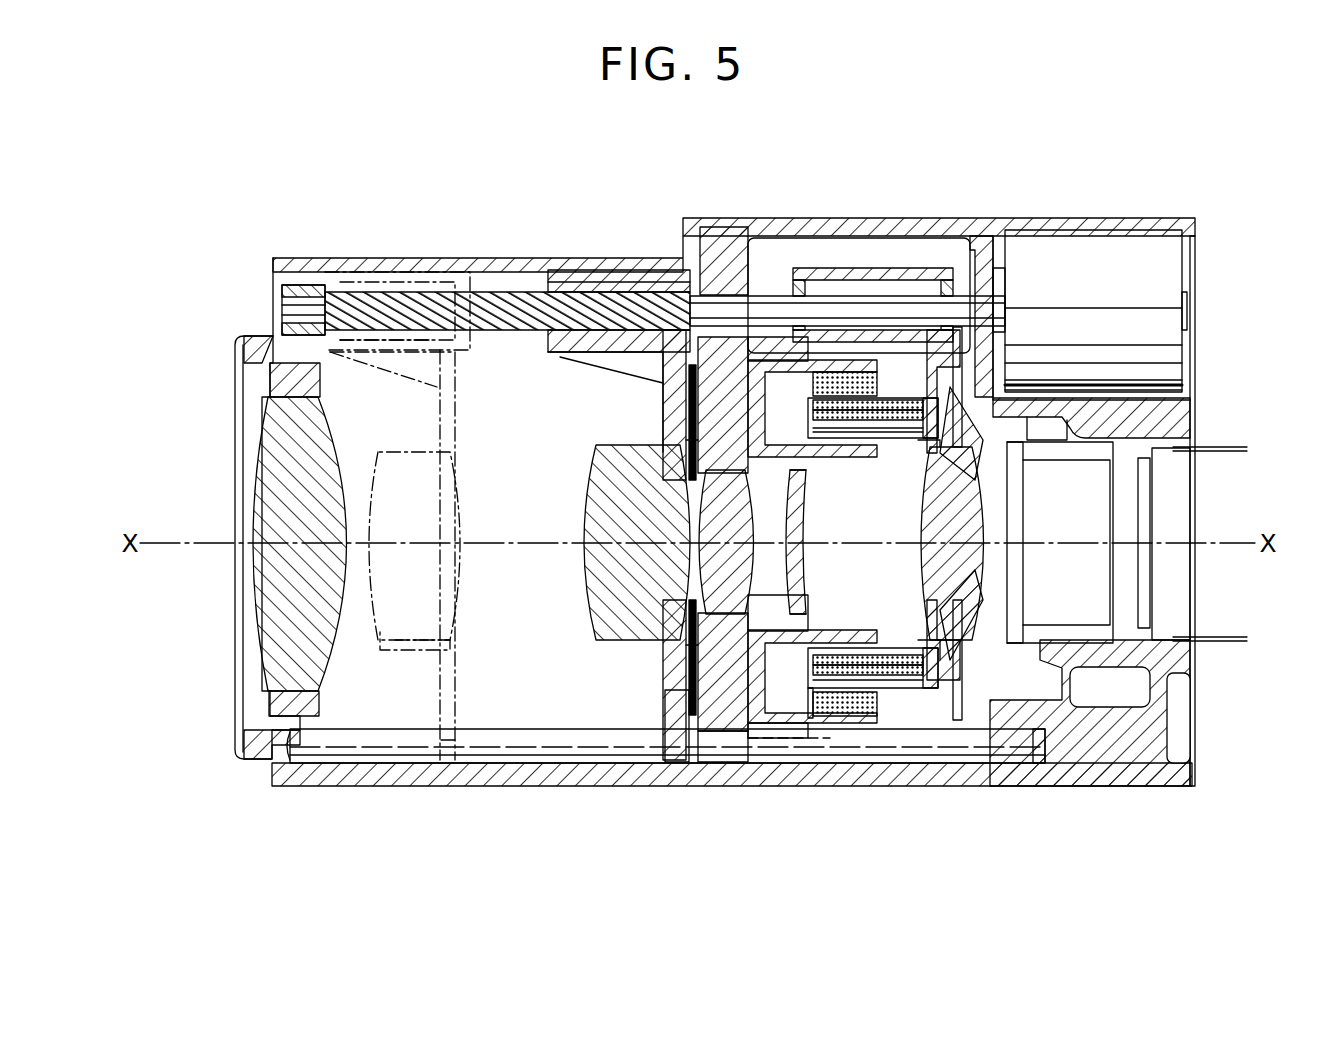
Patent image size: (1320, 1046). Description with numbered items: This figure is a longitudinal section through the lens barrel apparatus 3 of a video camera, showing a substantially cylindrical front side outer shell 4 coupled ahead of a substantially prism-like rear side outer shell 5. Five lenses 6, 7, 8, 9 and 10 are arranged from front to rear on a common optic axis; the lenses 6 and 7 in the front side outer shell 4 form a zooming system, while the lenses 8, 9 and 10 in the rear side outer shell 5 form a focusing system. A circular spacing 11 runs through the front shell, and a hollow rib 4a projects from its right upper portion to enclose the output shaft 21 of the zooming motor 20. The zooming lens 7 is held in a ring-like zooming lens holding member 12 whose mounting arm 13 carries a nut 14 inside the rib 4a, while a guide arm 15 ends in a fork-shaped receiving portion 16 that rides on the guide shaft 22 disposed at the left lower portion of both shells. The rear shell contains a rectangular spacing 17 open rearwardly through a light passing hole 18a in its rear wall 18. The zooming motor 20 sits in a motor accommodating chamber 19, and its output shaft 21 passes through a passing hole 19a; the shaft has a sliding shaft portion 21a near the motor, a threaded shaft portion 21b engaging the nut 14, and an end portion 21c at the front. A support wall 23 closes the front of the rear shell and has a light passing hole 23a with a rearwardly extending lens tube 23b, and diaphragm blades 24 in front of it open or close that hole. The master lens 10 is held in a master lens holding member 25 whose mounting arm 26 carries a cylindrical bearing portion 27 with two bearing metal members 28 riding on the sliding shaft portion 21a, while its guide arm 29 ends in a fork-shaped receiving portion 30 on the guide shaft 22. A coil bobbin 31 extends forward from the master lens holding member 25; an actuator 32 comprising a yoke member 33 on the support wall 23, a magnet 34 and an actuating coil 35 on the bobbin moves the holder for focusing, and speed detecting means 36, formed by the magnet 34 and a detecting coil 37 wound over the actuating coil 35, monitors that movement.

The lens barrel apparatus 3 is at (1065, 132).
The front side outer shell 4 is at (516, 788).
The radially projected hollow rib 4a is at (512, 258).
The rear side outer shell 5 is at (962, 236).
The lens 6 is at (272, 588).
The zooming lens 7 is at (372, 625).
The lens 8 is at (740, 582).
The lens 9 is at (806, 590).
The master lens 10 is at (935, 580).
The spacing 11 is at (508, 514).
The zooming lens holding member 12 is at (665, 437).
The mounting arm 13 is at (660, 390).
The nut 14 is at (610, 270).
The guide arm 15 is at (670, 700).
The fork-shaped receiving portion 16 is at (688, 700).
The spacing 17 is at (838, 517).
The rear wall 18 is at (1180, 410).
The light passing hole 18a is at (1030, 480).
The motor accommodating chamber 19 is at (1120, 392).
The passing hole 19a is at (1000, 302).
The zooming motor 20 is at (1165, 278).
The output shaft 21 is at (700, 227).
The sliding shaft portion 21a is at (840, 296).
The threaded shaft portion 21b is at (480, 292).
The end portion 21c is at (296, 296).
The guide shaft 22 is at (468, 788).
The support wall 23 is at (735, 227).
The light passing hole 23a is at (810, 482).
The lens tube 23b is at (760, 360).
The diaphragm blades 24 is at (688, 455).
The master lens holding member 25 is at (965, 420).
The mounting arm 26 is at (960, 370).
The bearing portion 27 is at (900, 268).
The bearing metal members 28 is at (798, 268).
The guide arm 29 is at (938, 700).
The fork-shaped receiving portion 30 is at (955, 710).
The coil bobbin 31 is at (790, 766).
The actuator 32 is at (842, 152).
The yoke member 33 is at (763, 783).
The magnet 34 is at (860, 372).
The actuating coil 35 is at (895, 400).
The speed detecting means 36 is at (845, 842).
The detecting coil 37 is at (913, 690).